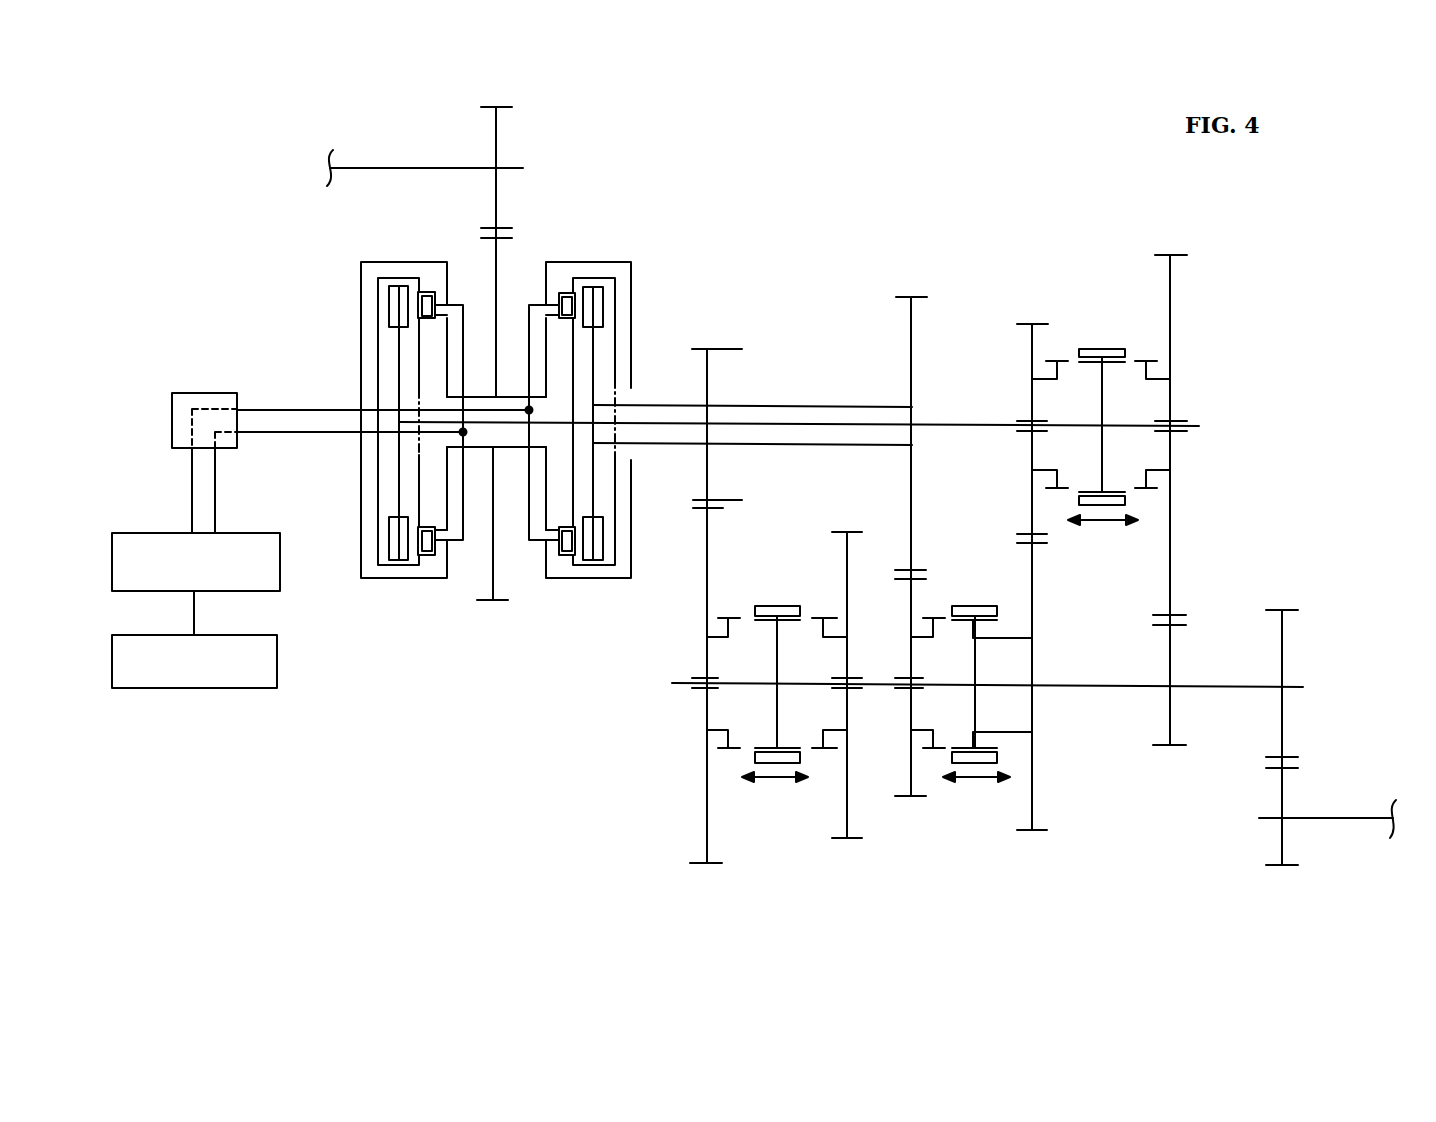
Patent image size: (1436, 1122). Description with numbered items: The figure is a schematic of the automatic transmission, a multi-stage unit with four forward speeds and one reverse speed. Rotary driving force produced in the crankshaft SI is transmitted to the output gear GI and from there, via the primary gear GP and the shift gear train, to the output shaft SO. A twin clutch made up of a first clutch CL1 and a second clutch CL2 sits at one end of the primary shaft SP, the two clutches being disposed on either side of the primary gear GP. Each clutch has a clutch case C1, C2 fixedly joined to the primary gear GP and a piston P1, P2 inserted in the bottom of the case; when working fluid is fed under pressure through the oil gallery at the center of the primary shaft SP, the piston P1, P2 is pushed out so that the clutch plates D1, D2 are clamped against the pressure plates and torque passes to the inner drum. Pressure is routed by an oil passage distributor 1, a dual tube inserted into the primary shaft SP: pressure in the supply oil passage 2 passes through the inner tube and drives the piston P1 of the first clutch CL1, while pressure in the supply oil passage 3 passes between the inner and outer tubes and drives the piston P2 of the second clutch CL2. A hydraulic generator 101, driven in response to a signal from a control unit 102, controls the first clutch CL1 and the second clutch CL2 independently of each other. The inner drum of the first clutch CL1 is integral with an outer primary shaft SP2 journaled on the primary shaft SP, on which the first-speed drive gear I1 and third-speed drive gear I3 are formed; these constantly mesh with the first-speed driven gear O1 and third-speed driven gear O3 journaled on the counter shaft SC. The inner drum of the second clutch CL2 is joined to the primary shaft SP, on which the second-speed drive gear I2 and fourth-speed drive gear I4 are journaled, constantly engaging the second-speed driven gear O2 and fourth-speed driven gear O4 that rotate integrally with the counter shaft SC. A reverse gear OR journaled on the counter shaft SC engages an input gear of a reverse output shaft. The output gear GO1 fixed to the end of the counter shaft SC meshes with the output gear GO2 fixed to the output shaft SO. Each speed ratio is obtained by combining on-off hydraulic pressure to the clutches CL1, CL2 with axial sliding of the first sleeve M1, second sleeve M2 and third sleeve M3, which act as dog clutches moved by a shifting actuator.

The output gear GI is at (503, 108).
The crankshaft SI is at (523, 168).
The primary gear GP is at (505, 601).
The first clutch CL1 is at (621, 481).
The second clutch CL2 is at (372, 481).
The clutch case C1 is at (595, 263).
The clutch case C2 is at (400, 263).
The clutch plates D1 is at (600, 302).
The clutch plates D2 is at (388, 300).
The piston P1 is at (566, 293).
The piston P2 is at (430, 292).
The oil passage distributor 1 is at (220, 393).
The supply oil passage 2 is at (192, 477).
The supply oil passage 3 is at (215, 477).
The hydraulic generator 101 is at (245, 533).
The control unit 102 is at (245, 635).
The primary shaft SP is at (1199, 426).
The outer primary shaft SP2 is at (912, 407).
The counter shaft SC is at (1303, 687).
The output shaft SO is at (1357, 818).
The 1st-speed drive gear I1 is at (718, 349).
The 2nd-speed drive gear I2 is at (1040, 324).
The 3rd-speed drive gear I3 is at (922, 297).
The 4th-speed drive gear I4 is at (1180, 255).
The 1st-speed driven gear O1 is at (710, 863).
The 2nd-speed driven gear O2 is at (1035, 830).
The 3rd-speed driven gear O3 is at (913, 796).
The 4th-speed driven gear O4 is at (1172, 745).
The reverse gear OR is at (850, 838).
The output gear GO1 is at (1293, 610).
The output gear GO2 is at (1290, 865).
The first sleeve M1 is at (777, 606).
The second sleeve M2 is at (973, 606).
The third sleeve M3 is at (1100, 349).